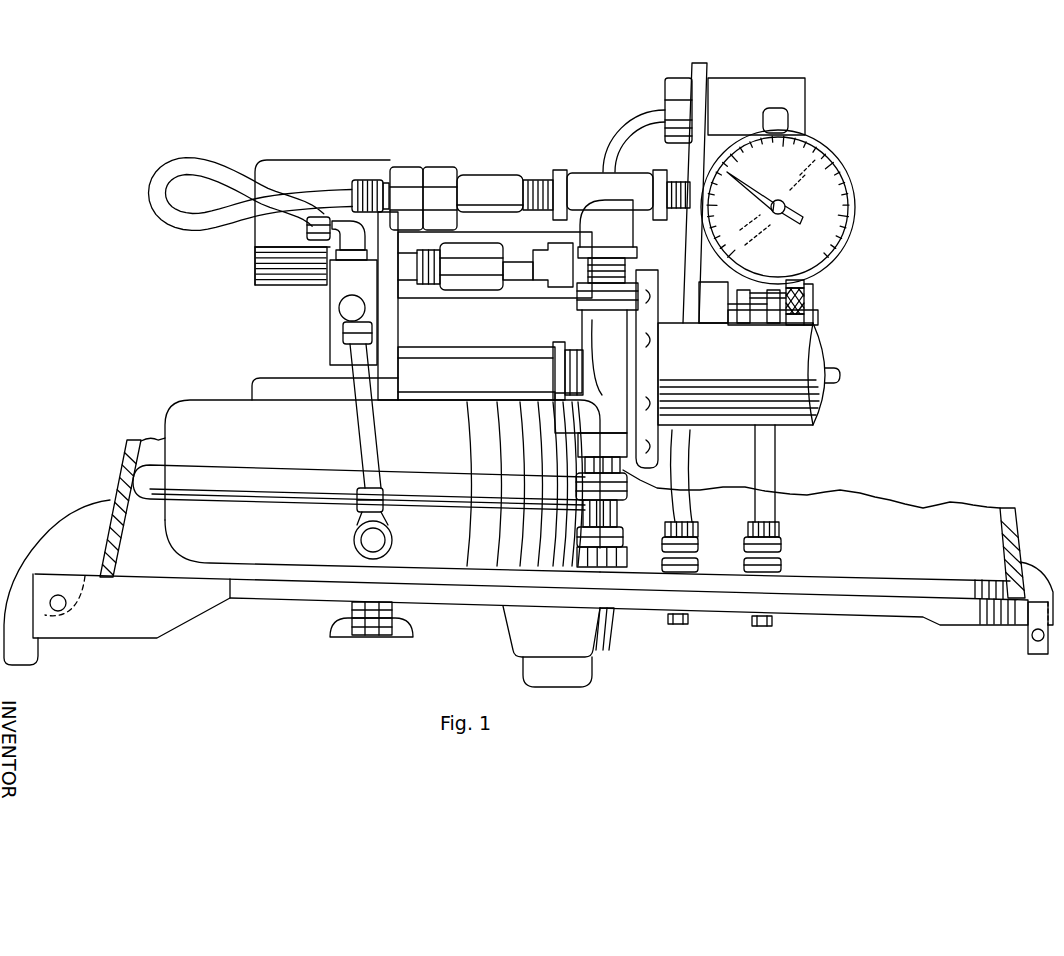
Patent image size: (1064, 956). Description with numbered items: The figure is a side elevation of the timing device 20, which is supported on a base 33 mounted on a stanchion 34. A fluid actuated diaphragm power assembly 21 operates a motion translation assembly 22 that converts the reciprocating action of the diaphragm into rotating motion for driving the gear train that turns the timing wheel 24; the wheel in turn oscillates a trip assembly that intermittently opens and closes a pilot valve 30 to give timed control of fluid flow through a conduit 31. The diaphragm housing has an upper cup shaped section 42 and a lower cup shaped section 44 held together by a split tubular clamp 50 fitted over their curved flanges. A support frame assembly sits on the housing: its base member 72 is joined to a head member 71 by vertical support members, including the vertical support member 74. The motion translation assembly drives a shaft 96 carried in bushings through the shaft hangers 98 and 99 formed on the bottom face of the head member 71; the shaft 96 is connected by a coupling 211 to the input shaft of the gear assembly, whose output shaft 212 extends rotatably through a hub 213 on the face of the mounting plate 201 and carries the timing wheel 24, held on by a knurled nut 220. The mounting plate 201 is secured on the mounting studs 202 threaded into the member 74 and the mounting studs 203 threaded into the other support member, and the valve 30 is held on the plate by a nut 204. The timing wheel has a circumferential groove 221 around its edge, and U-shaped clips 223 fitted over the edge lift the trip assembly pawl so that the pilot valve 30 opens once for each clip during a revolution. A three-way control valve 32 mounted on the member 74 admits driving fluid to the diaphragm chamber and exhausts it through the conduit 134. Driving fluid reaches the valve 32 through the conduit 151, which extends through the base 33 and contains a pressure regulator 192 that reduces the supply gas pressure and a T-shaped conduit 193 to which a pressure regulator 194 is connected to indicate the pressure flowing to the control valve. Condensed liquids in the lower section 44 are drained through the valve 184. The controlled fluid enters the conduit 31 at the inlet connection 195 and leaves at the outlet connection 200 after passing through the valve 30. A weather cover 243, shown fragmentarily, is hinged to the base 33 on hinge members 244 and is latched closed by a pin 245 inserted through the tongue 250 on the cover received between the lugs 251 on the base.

The timing device 20 is at (165, 125).
The fluid actuated diaphragm power assembly 21 is at (162, 392).
The motion translation assembly 22 is at (400, 305).
The timing wheel 24 is at (814, 326).
The pilot valve 30 is at (795, 82).
The conduit 31 is at (665, 92).
The three-way control valve 32 is at (330, 315).
The base 33 is at (300, 605).
The stanchion 34 is at (612, 650).
The upper cup shaped section 42 is at (166, 420).
The lower cup shaped section 44 is at (172, 542).
The clamp 50 is at (162, 504).
The head member 71 is at (290, 162).
The base member 72 is at (252, 380).
The vertical support member 74 is at (396, 338).
The drive shaft 96 is at (516, 283).
The shaft hanger 98 is at (258, 283).
The shaft hanger 99 is at (478, 288).
The conduit 134 is at (368, 437).
The conduit 151 is at (148, 190).
The valve 184 is at (370, 626).
The pressure regulator 192 is at (816, 405).
The T-shaped conduit 193 is at (585, 172).
The pressure regulator 194 is at (857, 198).
The inlet connection 195 is at (678, 622).
The outlet connection 200 is at (763, 620).
The mounting plate 201 is at (707, 62).
The mounting studs 202 is at (490, 371).
The mounting studs 203 is at (520, 355).
The nut 204 is at (685, 76).
The coupling 211 is at (560, 287).
The output shaft 212 is at (743, 313).
The hub 213 is at (712, 320).
The knurled nut 220 is at (805, 298).
The circumferential groove 221 is at (806, 288).
The U-shaped clips 223 is at (806, 313).
The cover 243 is at (55, 522).
The hinge members 244 is at (120, 638).
The pin 245 is at (1030, 637).
The tongue 250 is at (1020, 575).
The lugs 251 is at (1030, 641).